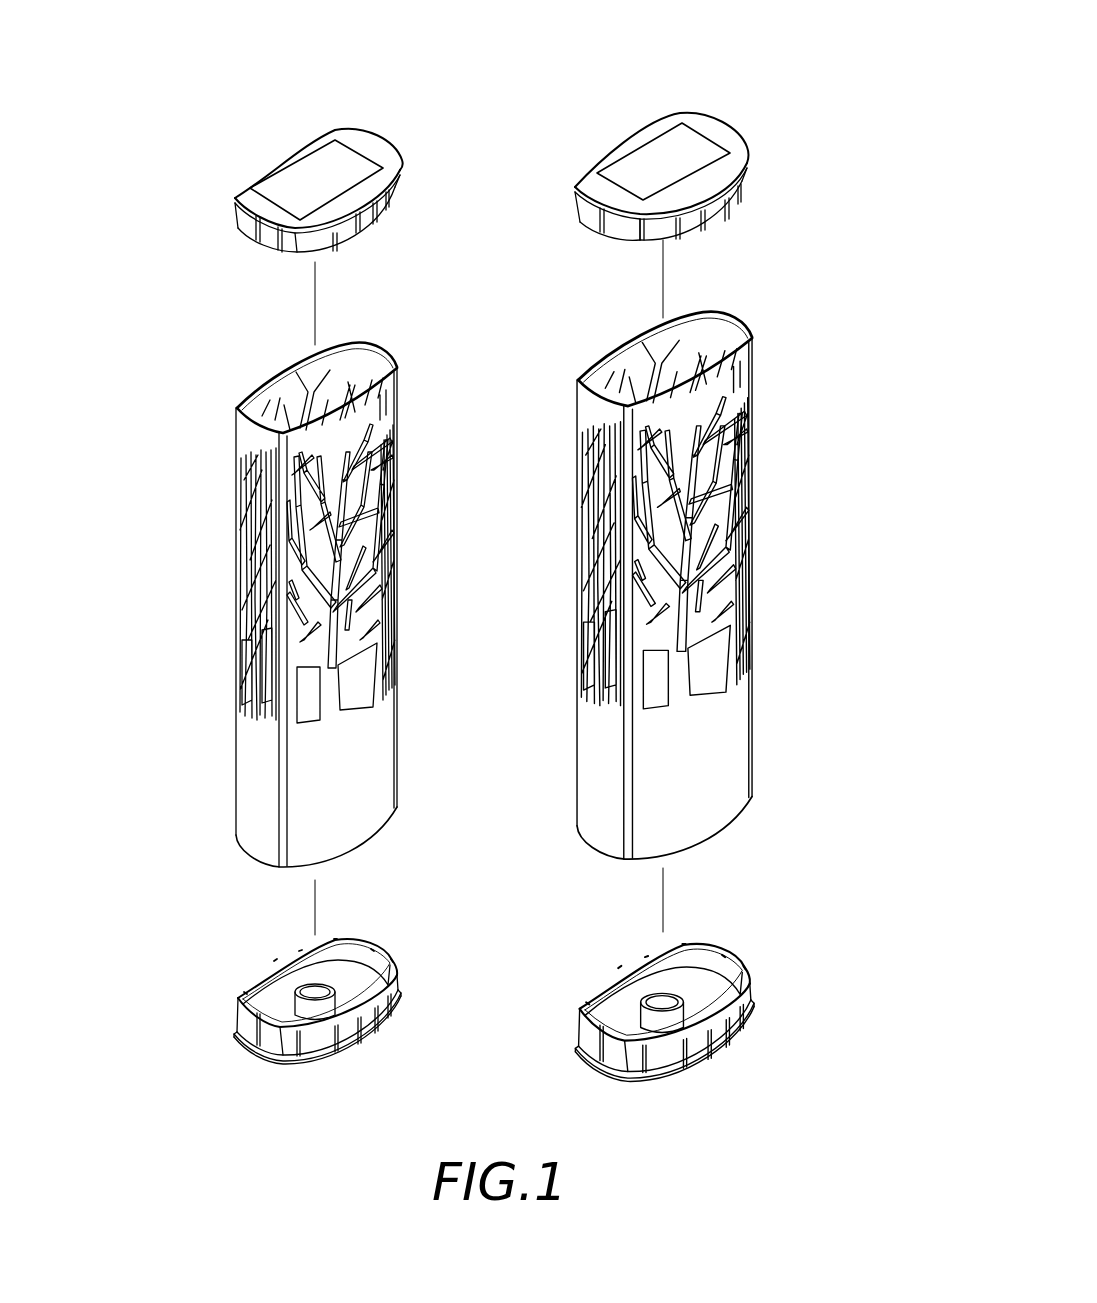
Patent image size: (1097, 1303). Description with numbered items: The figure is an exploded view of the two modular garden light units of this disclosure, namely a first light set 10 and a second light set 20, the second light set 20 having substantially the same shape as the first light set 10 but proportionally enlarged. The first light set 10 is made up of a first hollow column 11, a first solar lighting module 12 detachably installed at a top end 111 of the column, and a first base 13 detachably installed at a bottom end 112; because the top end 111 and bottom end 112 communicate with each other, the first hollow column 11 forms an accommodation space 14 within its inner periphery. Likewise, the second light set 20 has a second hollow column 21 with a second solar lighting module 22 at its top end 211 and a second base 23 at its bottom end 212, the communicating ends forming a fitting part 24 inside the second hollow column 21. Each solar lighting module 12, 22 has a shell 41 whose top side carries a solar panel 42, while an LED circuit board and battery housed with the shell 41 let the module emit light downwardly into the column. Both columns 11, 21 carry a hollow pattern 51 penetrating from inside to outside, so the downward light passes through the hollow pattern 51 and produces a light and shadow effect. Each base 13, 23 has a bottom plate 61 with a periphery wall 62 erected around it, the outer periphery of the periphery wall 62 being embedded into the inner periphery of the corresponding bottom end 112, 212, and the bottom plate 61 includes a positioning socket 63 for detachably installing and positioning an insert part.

The first light set 10 is at (158, 47).
The second light set 20 is at (842, 26).
The first hollow column 11 is at (236, 744).
The first solar lighting module 12 is at (230, 224).
The first base 13 is at (230, 1044).
The accommodation space 14 is at (285, 378).
The top end 111 is at (400, 395).
The bottom end 112 is at (399, 772).
The second hollow column 21 is at (751, 695).
The second solar lighting module 22 is at (768, 172).
The second base 23 is at (781, 1007).
The fitting part 24 is at (722, 340).
The top end 211 is at (752, 362).
The bottom end 212 is at (751, 773).
The shell 41 is at (366, 224).
The solar panel 42 is at (362, 155).
The hollow pattern 51 is at (382, 658).
The bottom plate 61 is at (392, 1012).
The periphery wall 62 is at (381, 965).
The positioning socket 63 is at (310, 985).